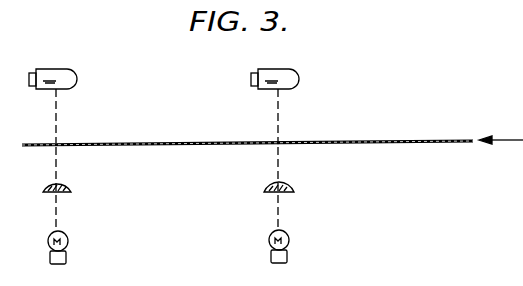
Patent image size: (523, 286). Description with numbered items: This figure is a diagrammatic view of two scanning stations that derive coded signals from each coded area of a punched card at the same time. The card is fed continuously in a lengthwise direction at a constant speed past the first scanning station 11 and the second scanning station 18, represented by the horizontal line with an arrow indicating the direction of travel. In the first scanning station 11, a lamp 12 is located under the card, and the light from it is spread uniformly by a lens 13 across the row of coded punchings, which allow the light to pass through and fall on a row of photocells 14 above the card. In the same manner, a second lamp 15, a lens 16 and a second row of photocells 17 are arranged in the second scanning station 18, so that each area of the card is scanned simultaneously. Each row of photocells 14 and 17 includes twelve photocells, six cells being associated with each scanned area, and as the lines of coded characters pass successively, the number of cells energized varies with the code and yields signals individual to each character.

The scanning station 11 is at (63, 136).
The lamp 12 is at (68, 238).
The lens 13 is at (72, 189).
The row of photocells 14 is at (70, 77).
The second lamp 15 is at (290, 238).
The lens 16 is at (296, 187).
The second row of photocells 17 is at (292, 78).
The second scanning station 18 is at (284, 138).